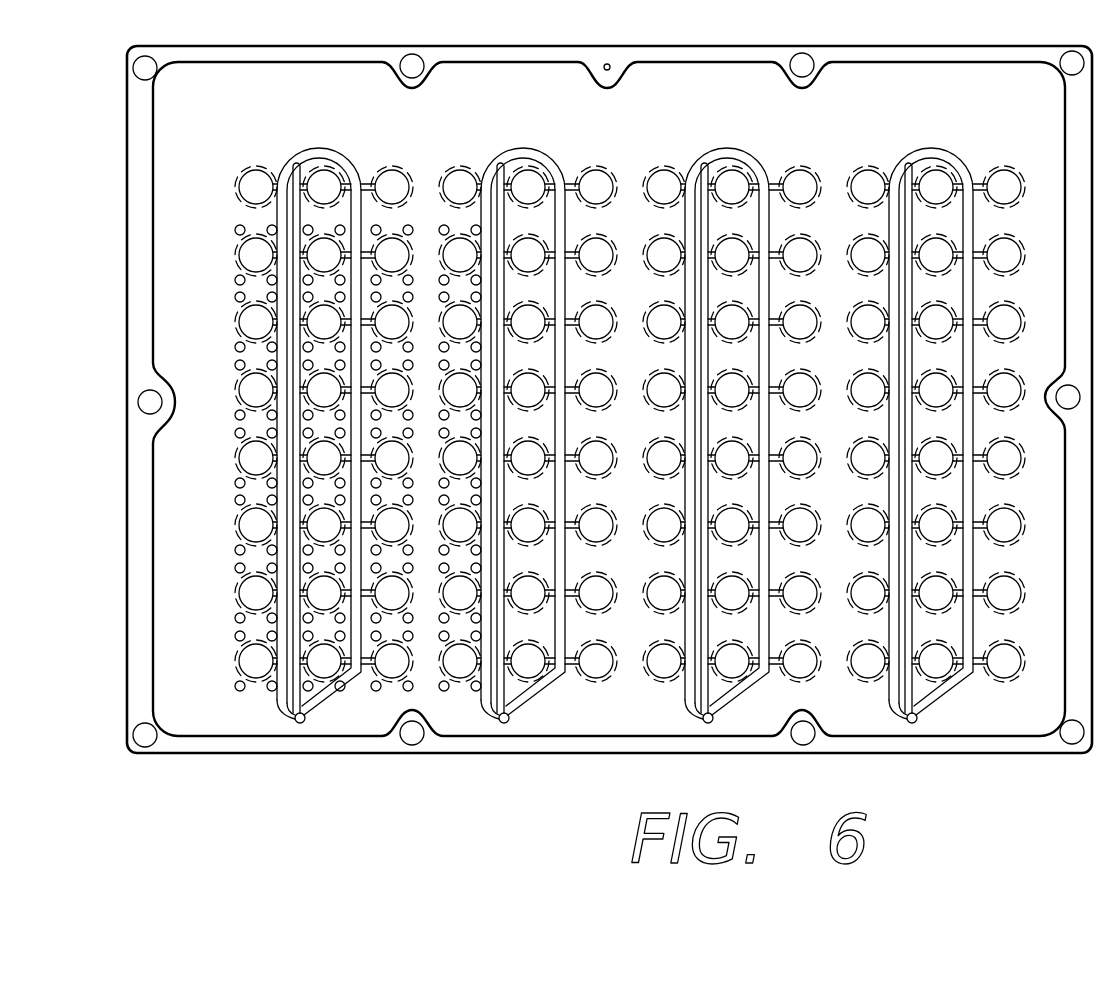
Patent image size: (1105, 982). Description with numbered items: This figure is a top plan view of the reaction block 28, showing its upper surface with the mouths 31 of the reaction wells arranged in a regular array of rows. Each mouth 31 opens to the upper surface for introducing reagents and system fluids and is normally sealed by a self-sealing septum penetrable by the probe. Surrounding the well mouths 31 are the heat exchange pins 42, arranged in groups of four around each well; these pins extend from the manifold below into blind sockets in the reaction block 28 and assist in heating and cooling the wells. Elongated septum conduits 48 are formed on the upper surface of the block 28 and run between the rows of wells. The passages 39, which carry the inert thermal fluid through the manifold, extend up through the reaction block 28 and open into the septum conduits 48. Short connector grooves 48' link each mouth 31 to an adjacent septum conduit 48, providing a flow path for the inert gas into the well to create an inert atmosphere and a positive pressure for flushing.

The reaction block 28 is at (127, 675).
The mouths of the wells 31 is at (247, 243).
The passages 39 is at (508, 722).
The heat exchange pins 42 is at (236, 618).
The septum conduits 48 is at (625, 414).
The connector grooves 48' is at (630, 392).